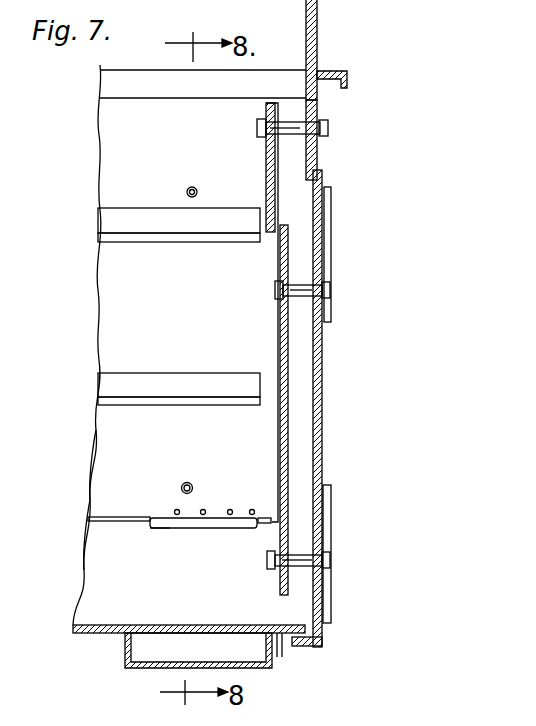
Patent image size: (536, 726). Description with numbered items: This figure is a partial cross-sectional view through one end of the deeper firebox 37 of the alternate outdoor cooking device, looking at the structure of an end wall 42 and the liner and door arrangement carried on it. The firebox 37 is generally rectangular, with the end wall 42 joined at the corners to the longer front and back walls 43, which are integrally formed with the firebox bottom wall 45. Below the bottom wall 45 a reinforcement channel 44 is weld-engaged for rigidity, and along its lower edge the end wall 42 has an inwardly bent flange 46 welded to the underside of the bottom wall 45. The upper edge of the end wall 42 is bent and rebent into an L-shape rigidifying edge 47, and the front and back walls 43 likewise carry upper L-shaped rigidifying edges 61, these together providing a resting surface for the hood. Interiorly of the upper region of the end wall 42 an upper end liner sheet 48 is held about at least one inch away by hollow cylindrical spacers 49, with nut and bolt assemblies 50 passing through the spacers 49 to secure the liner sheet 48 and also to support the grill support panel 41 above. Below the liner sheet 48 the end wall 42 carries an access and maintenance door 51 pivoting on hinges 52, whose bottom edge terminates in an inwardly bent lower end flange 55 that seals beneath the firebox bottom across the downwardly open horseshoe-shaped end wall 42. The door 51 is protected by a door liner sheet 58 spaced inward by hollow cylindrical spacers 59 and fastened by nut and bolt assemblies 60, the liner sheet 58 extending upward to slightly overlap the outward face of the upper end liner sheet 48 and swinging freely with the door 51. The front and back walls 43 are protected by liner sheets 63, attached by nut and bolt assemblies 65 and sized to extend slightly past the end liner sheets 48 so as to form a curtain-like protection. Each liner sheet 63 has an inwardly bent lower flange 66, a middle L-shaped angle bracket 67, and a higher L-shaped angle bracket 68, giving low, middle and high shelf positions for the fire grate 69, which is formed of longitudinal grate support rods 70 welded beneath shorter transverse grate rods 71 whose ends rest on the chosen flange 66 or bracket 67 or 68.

The firebox 37 is at (116, 445).
The grill support panels 41 is at (317, 28).
The end walls 42 is at (322, 108).
The front and back walls 43 is at (100, 565).
The reinforcement channels 44 is at (124, 661).
The firebox bottom wall 45 is at (110, 625).
The inwardly bent flanges 46 is at (282, 658).
The L-shape rigidifying edges 47 is at (349, 76).
The upper end liner sheets 48 is at (267, 156).
The hollow cylindrical spacers 49 is at (258, 117).
The nut and bolt assemblies 50 is at (330, 128).
The access and maintenance doors 51 is at (324, 386).
The hinges 52 is at (334, 212).
The lower end flanges 55 is at (306, 650).
The door liner sheets 58 is at (282, 340).
The hollow cylindrical spacers 59 is at (300, 286).
The nut and bolt assemblies 60 is at (332, 291).
The L-shaped rigidifying edges 61 is at (128, 65).
The liner sheets 63 is at (110, 272).
The nut and bolt assemblies 65 is at (186, 187).
The inwardly bent flanges 66 is at (107, 516).
The L-shaped angle brackets 67 is at (115, 378).
The L-shaped angle brackets 68 is at (115, 222).
The fire grate 69 is at (160, 535).
The longitudinal grate support rods 70 is at (198, 528).
The transverse grate rods 71 is at (230, 510).